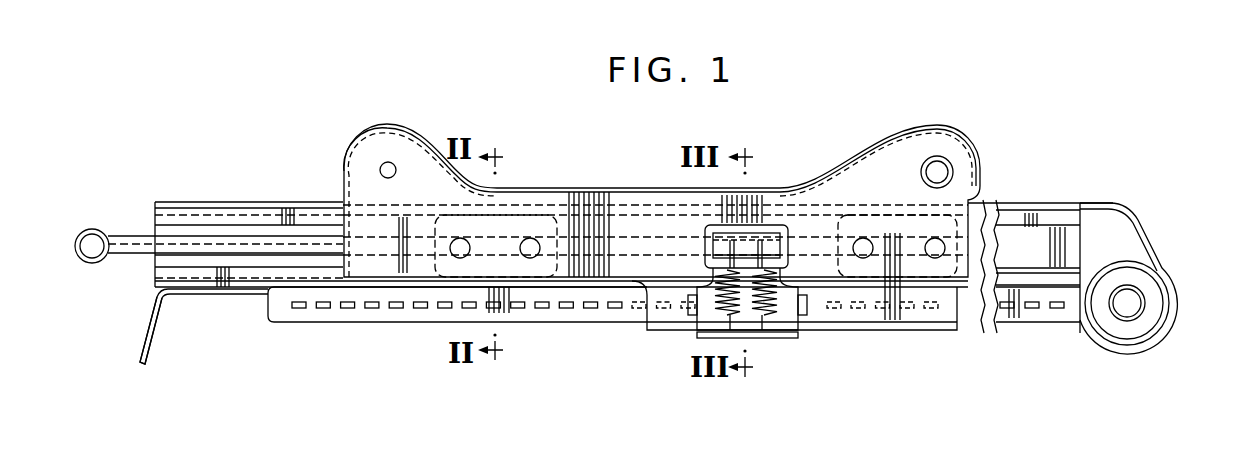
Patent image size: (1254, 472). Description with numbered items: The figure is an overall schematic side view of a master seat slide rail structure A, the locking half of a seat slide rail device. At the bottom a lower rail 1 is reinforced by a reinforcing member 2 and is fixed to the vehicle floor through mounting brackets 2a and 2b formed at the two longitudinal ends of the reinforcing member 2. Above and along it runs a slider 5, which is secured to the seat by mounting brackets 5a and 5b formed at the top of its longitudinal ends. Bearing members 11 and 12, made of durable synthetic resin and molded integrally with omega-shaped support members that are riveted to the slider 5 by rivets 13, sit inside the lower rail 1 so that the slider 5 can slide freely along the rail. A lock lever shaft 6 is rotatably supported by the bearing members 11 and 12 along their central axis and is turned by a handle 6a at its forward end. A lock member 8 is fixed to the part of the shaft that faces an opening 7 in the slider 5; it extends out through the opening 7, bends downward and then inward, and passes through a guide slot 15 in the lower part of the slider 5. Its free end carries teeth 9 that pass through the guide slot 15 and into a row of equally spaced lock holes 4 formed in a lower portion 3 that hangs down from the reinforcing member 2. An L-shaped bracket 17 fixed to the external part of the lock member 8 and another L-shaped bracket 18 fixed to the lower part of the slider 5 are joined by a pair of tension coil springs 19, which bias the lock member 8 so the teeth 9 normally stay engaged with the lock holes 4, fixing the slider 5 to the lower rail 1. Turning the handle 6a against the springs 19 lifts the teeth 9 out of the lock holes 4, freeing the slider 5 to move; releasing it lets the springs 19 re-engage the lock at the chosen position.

The lower rail 1 is at (243, 212).
The reinforcing member 2 is at (210, 291).
The mounting bracket 2a is at (146, 361).
The mounting bracket 2b is at (1176, 302).
The lower portion 3 is at (457, 319).
The lock holes 4 is at (440, 309).
The slider 5 is at (592, 190).
The mounting bracket 5a is at (402, 125).
The mounting bracket 5b is at (913, 133).
The lock lever shaft 6 is at (133, 240).
The handle 6a is at (94, 230).
The opening 7 is at (767, 226).
The lock member 8 is at (827, 308).
The teeth 9 is at (700, 310).
The bearing member 11 is at (510, 215).
The bearing member 12 is at (847, 222).
The rivets 13 is at (937, 238).
The guide slot 15 is at (800, 318).
The bracket 17 is at (713, 228).
The bracket 18 is at (752, 333).
The tension coil springs 19 is at (787, 333).
The master seat slide rail structure A is at (1003, 157).